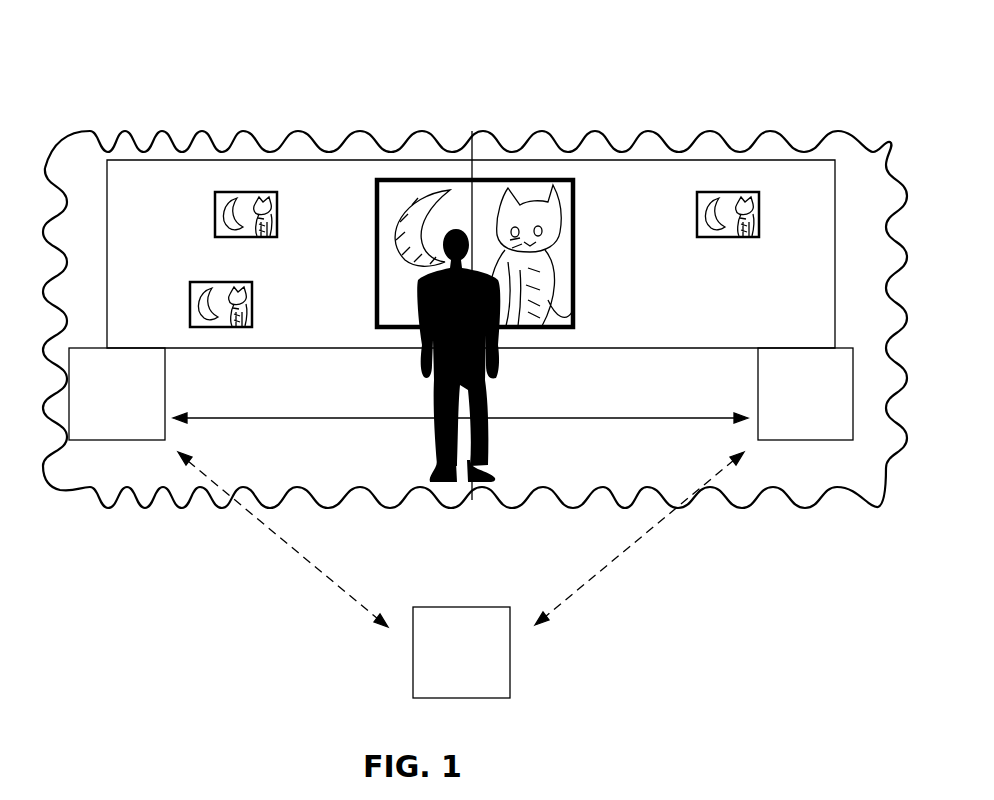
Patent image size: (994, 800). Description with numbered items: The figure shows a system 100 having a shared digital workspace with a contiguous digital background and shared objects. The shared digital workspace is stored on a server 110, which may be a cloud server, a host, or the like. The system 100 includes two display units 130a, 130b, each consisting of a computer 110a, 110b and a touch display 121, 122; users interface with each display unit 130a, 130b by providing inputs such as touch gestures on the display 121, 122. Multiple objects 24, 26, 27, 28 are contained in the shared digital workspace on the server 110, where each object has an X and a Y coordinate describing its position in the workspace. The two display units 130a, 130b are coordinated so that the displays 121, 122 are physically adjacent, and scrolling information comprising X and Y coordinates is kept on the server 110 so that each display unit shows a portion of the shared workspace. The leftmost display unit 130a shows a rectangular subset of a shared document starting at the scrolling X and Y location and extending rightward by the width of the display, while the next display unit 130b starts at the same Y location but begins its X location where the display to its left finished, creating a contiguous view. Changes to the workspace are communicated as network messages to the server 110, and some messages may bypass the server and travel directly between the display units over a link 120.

The system 100 is at (692, 95).
The display unit 130a is at (158, 131).
The display unit 130b is at (850, 134).
The object 24 is at (558, 290).
The object 26 is at (227, 224).
The object 27 is at (195, 312).
The object 28 is at (752, 222).
The server 110 is at (490, 680).
The computer 110a is at (158, 378).
The computer 110b is at (810, 440).
The communication link 120 is at (562, 365).
The touch display 121 is at (308, 323).
The touch display 122 is at (697, 323).